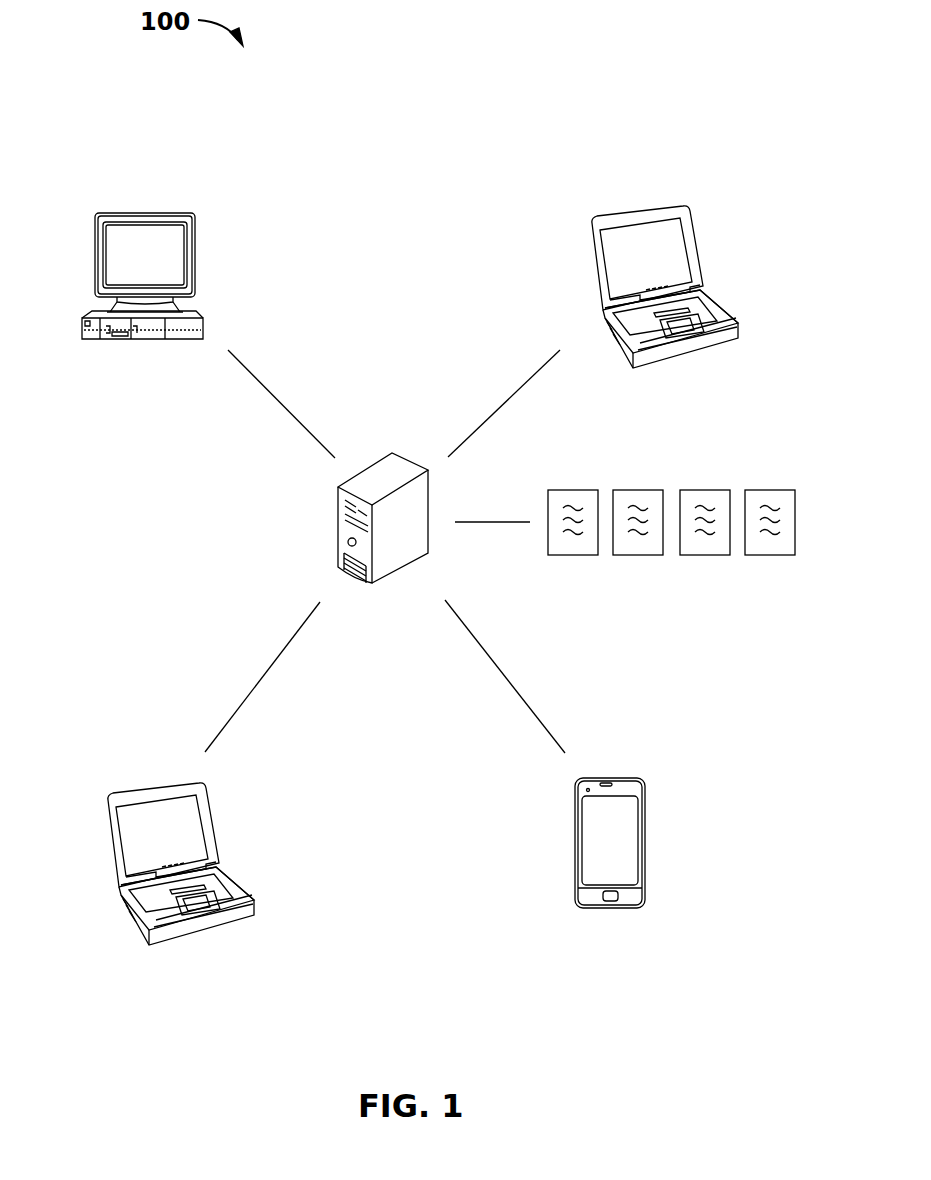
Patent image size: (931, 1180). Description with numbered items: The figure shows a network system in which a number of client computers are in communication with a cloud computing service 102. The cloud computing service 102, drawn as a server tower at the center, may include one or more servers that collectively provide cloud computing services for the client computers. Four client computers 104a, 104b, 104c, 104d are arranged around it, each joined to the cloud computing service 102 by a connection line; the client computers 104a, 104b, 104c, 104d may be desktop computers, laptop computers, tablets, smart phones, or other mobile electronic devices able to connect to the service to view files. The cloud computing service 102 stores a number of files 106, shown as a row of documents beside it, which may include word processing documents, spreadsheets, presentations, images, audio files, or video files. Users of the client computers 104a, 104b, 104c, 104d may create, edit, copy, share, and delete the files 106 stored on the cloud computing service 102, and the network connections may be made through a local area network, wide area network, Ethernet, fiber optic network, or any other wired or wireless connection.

The cloud computing service 102 is at (392, 452).
The client computer 104a is at (120, 207).
The client computer 104b is at (602, 215).
The client computer 104c is at (118, 797).
The client computer 104d is at (618, 777).
The files 106 is at (670, 473).